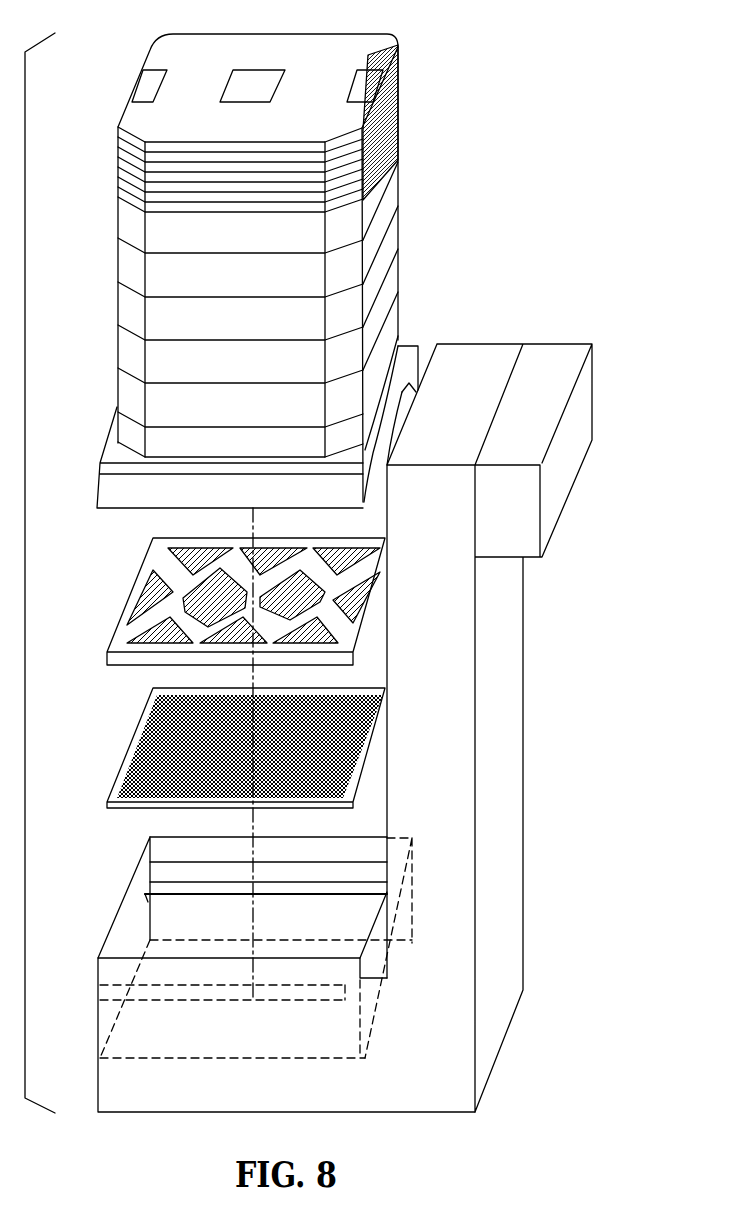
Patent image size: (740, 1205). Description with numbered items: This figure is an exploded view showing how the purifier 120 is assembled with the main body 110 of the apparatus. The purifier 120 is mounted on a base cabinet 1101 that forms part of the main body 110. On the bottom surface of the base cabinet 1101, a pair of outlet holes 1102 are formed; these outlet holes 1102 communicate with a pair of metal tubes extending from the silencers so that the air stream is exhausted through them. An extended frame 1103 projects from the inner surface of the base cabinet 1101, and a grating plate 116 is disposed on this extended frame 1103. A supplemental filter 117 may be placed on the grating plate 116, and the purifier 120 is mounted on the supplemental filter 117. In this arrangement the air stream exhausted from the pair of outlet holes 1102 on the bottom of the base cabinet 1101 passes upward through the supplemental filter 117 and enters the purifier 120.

The purifier 120 is at (392, 242).
The supplemental filter 117 is at (132, 607).
The grating plate 116 is at (127, 742).
The main body 110 is at (462, 882).
The base cabinet 1101 is at (343, 1025).
The outlet holes 1102 is at (175, 913).
The extended frame 1103 is at (312, 868).